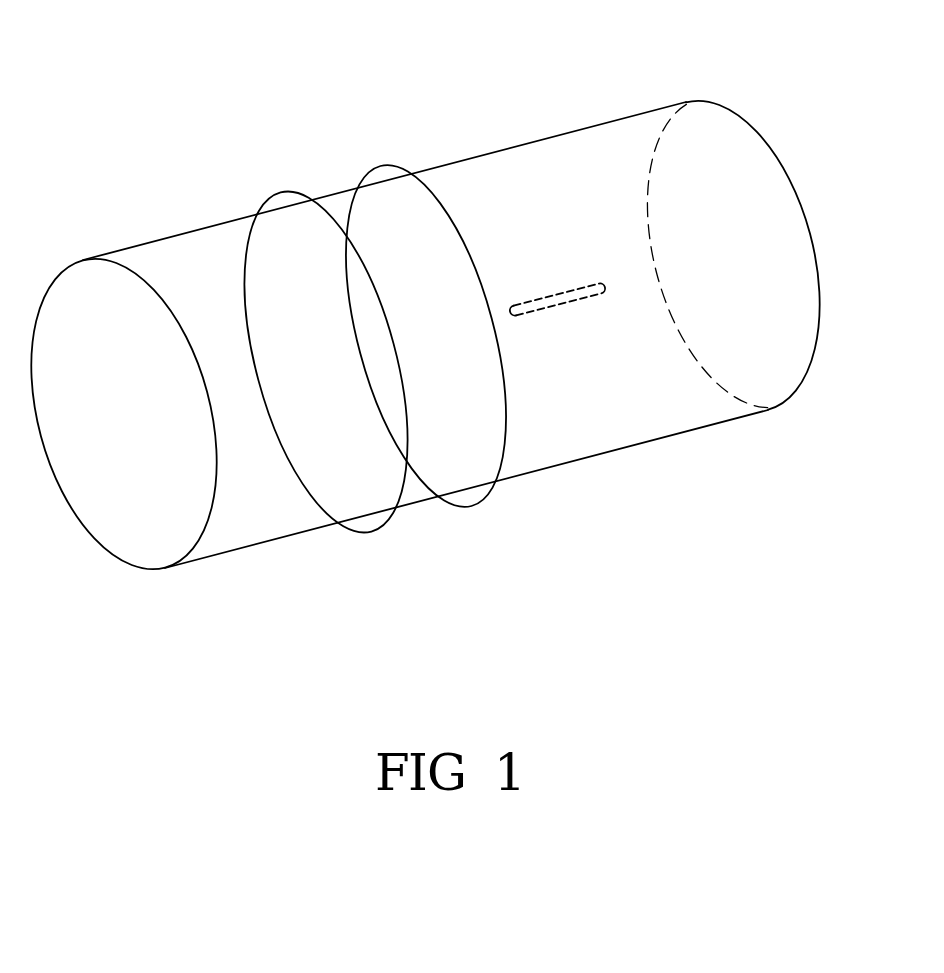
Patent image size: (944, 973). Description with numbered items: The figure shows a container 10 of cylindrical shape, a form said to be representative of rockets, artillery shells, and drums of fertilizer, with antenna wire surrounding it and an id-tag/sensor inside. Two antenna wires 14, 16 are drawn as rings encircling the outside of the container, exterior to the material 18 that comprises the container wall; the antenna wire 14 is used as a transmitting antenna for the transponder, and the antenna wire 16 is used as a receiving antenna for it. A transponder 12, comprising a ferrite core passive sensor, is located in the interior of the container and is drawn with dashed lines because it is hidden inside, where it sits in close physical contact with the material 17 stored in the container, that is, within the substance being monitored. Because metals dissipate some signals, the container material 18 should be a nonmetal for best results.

The container 10 is at (425, 378).
The transponder 12 is at (558, 295).
The antenna wire 14 is at (286, 192).
The antenna wire 16 is at (386, 165).
The material stored in the container 17 is at (578, 415).
The container material 18 is at (278, 540).